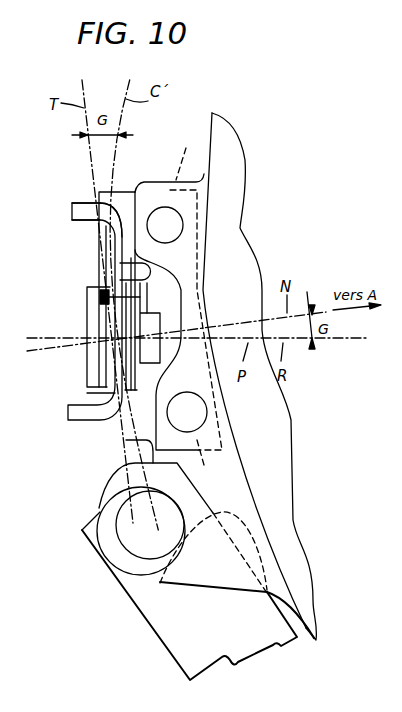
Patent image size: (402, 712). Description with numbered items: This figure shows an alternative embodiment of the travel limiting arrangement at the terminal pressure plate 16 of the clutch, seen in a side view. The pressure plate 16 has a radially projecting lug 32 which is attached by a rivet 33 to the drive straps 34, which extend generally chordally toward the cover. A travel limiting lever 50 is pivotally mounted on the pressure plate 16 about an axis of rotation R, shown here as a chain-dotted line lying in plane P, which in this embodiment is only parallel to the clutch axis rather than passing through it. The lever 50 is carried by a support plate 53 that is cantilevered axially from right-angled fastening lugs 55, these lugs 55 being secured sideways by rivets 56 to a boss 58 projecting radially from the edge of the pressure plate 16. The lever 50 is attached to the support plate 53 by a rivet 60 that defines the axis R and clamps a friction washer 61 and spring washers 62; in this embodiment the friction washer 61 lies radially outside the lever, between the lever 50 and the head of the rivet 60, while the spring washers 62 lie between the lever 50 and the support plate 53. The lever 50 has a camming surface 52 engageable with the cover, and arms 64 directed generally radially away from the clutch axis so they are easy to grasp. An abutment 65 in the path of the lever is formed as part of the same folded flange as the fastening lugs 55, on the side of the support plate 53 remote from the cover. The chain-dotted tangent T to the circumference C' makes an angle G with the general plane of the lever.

The terminal pressure plate 16 is at (247, 187).
The lug 32 is at (100, 520).
The rivet 33 is at (128, 537).
The drive strap 34 is at (238, 640).
The travel limiting lever 50 is at (73, 222).
The camming surface 52 is at (113, 256).
The support plate 53 is at (132, 445).
The fastening lug 55 is at (213, 361).
The rivet 56 is at (172, 218).
The boss 58 is at (153, 183).
The rivet 60 is at (90, 362).
The friction washer 61 is at (100, 392).
The spring washer 62 is at (132, 305).
The arm 64 is at (72, 210).
The abutment 65 is at (117, 200).